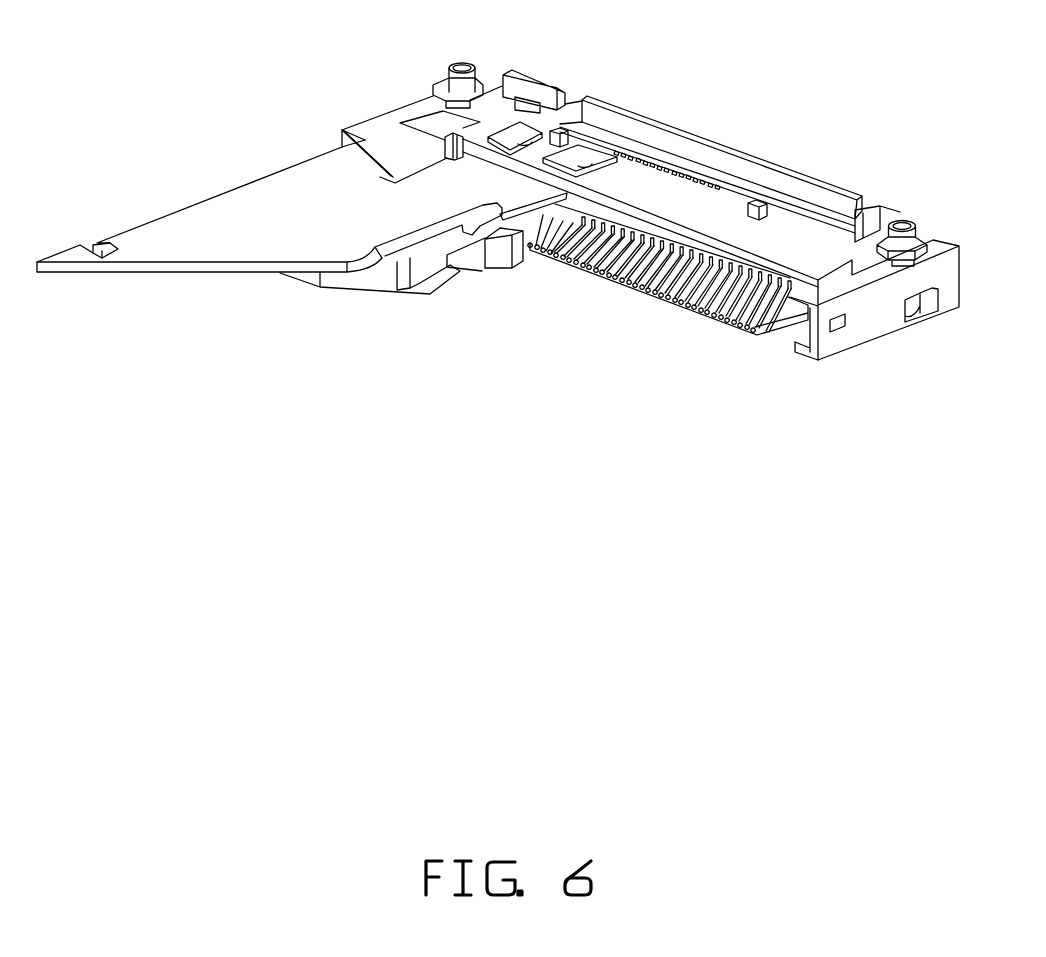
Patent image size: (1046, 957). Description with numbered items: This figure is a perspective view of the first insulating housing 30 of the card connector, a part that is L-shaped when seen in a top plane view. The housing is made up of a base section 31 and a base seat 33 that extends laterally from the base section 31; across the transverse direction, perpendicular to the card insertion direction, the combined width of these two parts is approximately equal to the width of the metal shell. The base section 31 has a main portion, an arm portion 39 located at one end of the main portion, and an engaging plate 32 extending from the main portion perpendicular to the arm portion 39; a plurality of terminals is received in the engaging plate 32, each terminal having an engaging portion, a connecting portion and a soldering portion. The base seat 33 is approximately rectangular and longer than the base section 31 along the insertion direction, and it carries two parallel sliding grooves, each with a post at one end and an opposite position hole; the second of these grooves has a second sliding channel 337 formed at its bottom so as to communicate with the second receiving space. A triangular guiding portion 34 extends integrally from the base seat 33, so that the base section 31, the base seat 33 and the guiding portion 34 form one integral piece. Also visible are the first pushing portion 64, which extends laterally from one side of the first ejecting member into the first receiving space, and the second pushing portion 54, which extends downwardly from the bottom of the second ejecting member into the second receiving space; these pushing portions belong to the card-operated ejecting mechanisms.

The first insulating housing 30 is at (700, 193).
The base section 31 is at (628, 175).
The engaging plate 32 is at (695, 302).
The base seat 33 is at (388, 133).
The second sliding channel 337 is at (342, 130).
The guiding portion 34 is at (170, 266).
The arm portion 39 is at (827, 342).
The second pushing portion 54 is at (453, 133).
The first pushing portion 64 is at (497, 257).